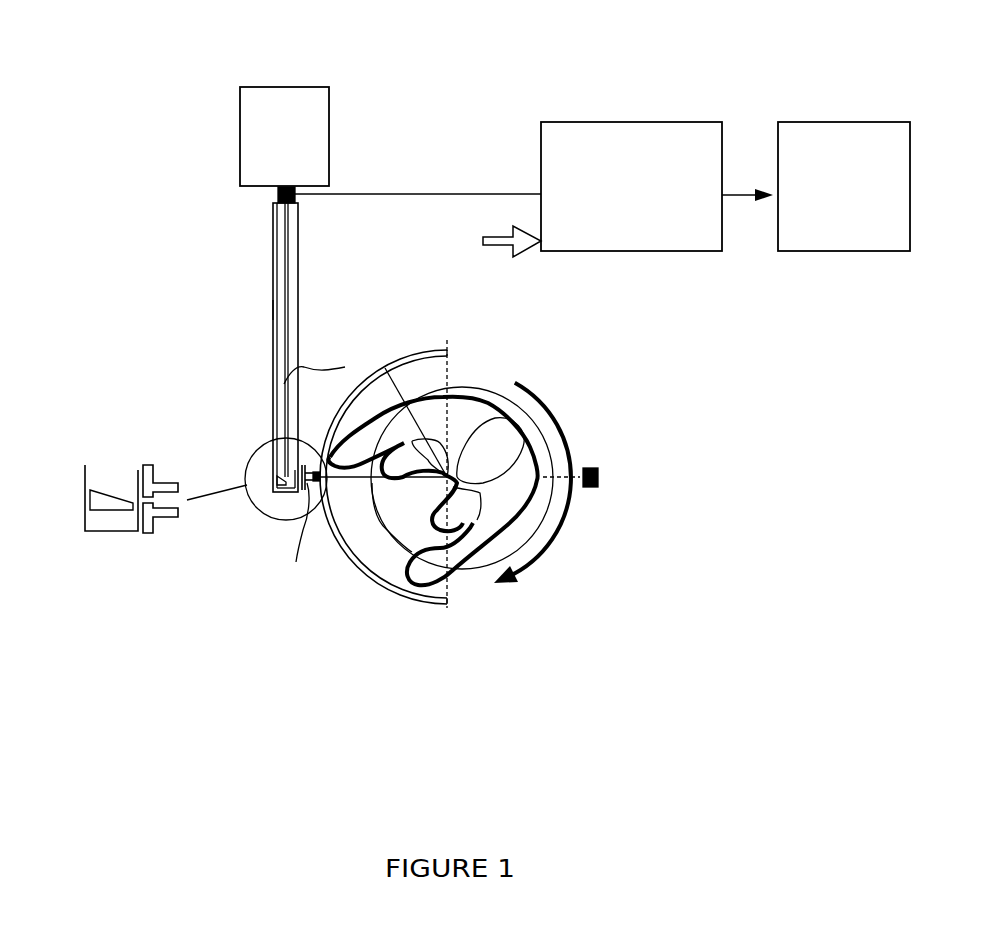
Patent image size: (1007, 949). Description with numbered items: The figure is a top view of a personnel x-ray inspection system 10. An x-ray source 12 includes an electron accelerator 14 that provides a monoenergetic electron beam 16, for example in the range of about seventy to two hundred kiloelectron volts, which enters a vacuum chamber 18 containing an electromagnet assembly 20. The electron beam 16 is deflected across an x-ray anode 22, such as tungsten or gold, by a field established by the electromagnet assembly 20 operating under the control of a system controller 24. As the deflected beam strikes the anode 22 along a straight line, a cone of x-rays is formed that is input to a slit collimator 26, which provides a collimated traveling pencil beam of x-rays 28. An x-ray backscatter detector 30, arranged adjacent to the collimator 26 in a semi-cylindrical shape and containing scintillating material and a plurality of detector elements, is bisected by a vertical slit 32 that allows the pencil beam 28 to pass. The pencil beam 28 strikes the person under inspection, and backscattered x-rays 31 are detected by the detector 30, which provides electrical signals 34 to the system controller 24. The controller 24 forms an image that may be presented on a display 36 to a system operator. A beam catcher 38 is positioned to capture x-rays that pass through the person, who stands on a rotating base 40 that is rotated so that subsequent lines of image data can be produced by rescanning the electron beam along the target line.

The personnel x-ray inspection system 10 is at (506, 74).
The x-ray source 12 is at (355, 150).
The electron accelerator 14 is at (253, 165).
The electron beam 16 is at (287, 260).
The vacuum chamber 18 is at (284, 307).
The electromagnet assembly 20 is at (278, 195).
The x-ray anode 22 is at (277, 490).
The system controller 24 is at (625, 137).
The slit collimator 26 is at (303, 513).
The pencil beam of x-rays 28 is at (352, 479).
The x-ray backscatter detector 30 is at (428, 348).
The backscattered x-rays 31 is at (382, 560).
The vertical slit 32 is at (330, 452).
The electrical signals 34 is at (492, 245).
The display 36 is at (793, 140).
The beam catcher 38 is at (598, 473).
The rotating base 40 is at (468, 392).